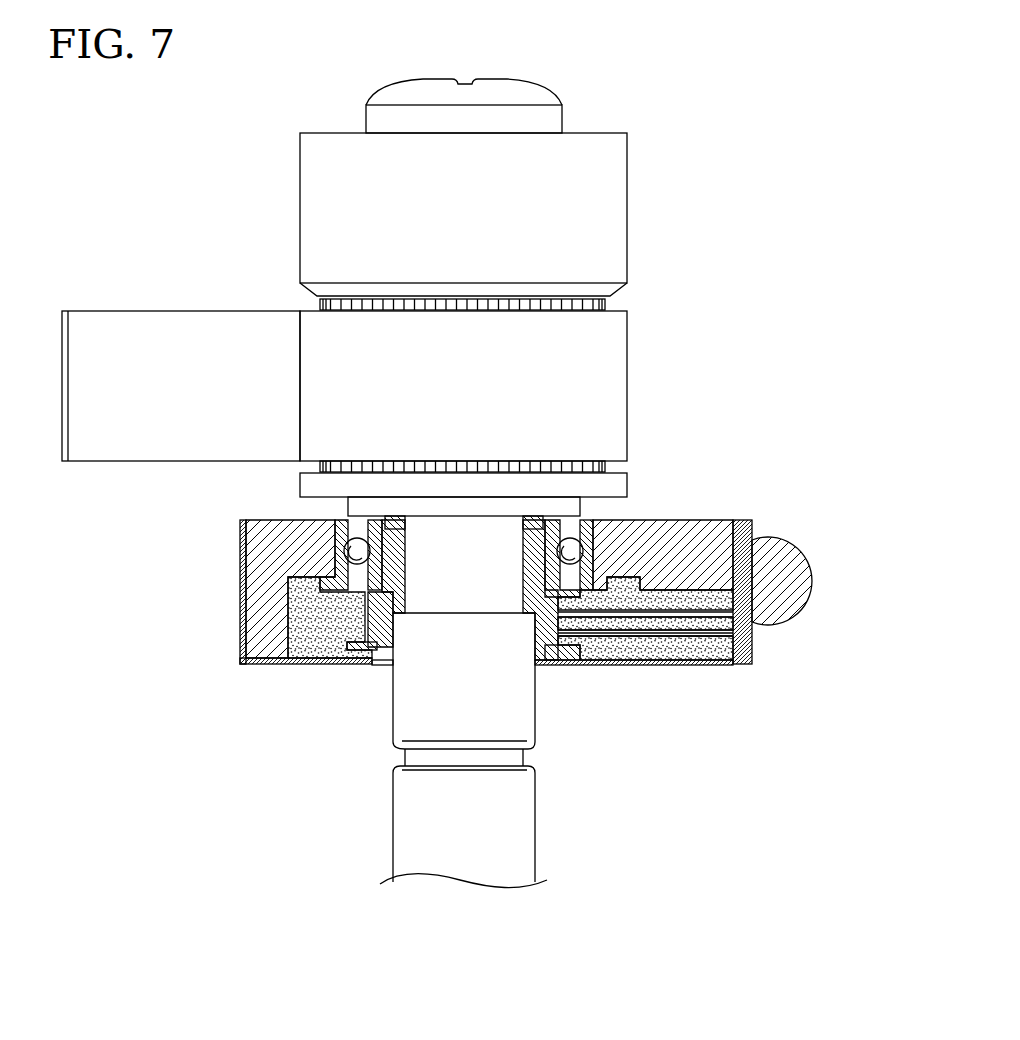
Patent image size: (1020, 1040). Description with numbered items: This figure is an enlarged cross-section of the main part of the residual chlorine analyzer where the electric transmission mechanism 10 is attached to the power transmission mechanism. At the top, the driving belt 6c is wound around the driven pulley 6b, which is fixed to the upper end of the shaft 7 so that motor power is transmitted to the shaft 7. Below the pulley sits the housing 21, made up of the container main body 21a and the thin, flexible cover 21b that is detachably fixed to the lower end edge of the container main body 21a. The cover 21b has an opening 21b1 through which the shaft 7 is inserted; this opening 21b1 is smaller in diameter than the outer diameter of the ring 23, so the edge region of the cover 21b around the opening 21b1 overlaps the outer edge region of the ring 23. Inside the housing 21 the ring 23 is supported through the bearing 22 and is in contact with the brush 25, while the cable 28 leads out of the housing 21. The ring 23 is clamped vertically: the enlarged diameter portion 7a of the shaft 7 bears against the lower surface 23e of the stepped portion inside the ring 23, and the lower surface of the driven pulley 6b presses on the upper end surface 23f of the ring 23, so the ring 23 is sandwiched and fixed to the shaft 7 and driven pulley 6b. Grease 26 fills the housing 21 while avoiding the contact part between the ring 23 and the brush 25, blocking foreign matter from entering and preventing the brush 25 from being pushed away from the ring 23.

The driven pulley 6b is at (620, 488).
The driving belt 6c is at (620, 345).
The shaft 7 is at (547, 854).
The enlarged diameter portion 7a is at (522, 723).
The electric transmission mechanism 10 is at (513, 589).
The housing 21 is at (235, 681).
The container main body 21a is at (262, 542).
The cover 21b is at (273, 667).
The opening 21b1 is at (383, 666).
The bearing 22 is at (609, 545).
The ring 23 is at (543, 653).
The lower surface of the stepped portion 23e is at (402, 613).
The upper end surface 23f is at (390, 516).
The brush 25 is at (710, 613).
The grease 26 is at (637, 650).
The cable 28 is at (797, 572).